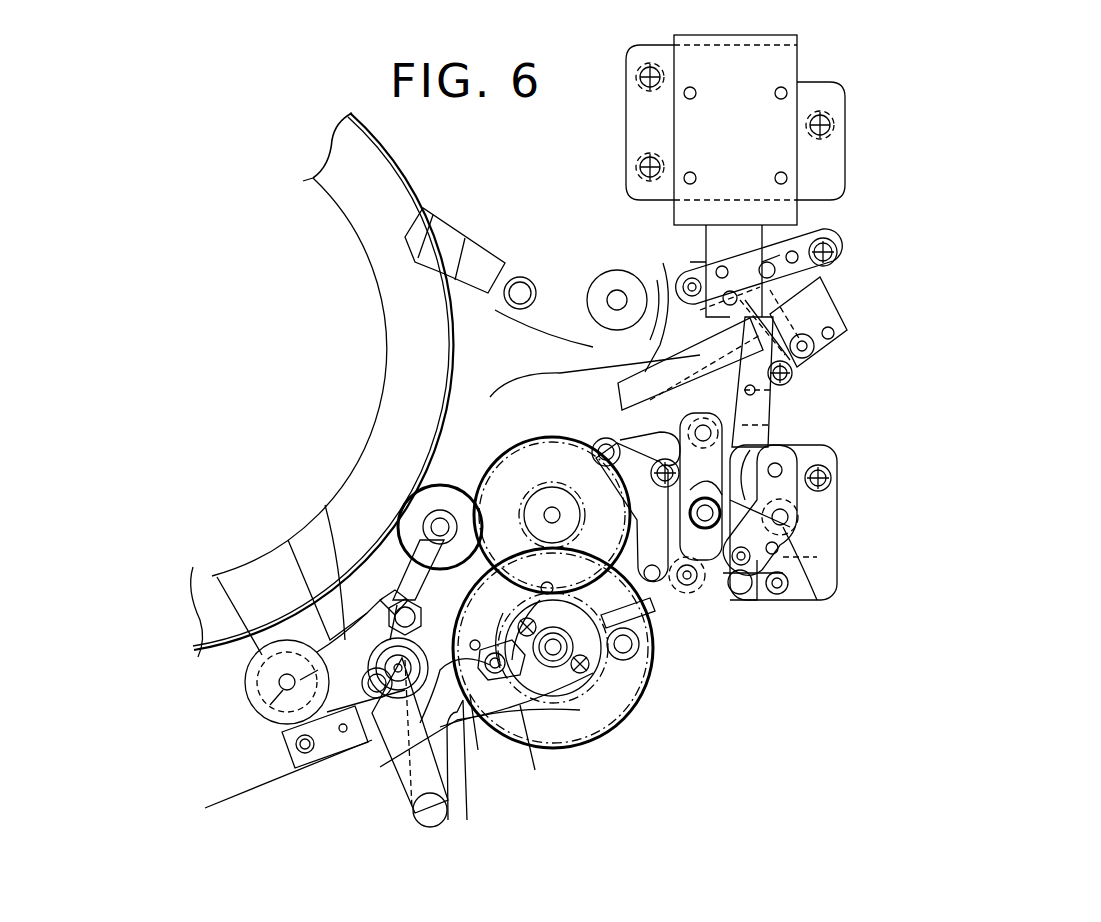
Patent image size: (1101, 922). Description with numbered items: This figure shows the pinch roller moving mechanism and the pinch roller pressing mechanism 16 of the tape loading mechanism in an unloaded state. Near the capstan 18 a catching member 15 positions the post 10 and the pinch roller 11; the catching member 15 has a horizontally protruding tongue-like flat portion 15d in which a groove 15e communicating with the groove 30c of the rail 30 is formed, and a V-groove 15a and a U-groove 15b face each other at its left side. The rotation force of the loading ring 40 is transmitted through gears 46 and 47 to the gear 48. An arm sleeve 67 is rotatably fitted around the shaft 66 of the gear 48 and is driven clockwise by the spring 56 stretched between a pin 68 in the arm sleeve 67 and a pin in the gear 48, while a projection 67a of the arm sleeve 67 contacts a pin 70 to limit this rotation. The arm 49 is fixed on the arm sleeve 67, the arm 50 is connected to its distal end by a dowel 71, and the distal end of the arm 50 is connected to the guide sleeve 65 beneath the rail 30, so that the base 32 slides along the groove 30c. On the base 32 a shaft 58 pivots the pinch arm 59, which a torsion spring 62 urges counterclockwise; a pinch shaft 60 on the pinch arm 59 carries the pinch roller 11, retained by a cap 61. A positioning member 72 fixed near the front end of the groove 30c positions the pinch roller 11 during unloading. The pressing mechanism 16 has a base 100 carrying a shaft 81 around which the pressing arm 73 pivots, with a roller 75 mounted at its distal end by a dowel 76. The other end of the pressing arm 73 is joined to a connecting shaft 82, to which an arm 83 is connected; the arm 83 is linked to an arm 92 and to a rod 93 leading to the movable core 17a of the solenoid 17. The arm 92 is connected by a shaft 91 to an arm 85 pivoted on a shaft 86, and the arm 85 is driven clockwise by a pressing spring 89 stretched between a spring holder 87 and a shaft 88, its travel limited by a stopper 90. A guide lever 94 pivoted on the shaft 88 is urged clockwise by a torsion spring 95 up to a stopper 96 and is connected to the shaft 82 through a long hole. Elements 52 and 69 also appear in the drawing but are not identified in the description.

The solenoid 17 is at (788, 64).
The movable core 17a is at (772, 240).
The catching member 15 is at (828, 237).
The V-groove 15a is at (828, 300).
The U-groove 15b is at (800, 366).
The tongue-like flat portion 15d is at (714, 248).
The groove 15e is at (642, 368).
The capstan 18 is at (614, 300).
The rail 30 is at (555, 347).
The groove 30c is at (497, 395).
The loading ring 40 is at (357, 228).
The gear 46 is at (437, 493).
The gear 47 is at (521, 457).
The gear 48 is at (637, 683).
The arm 49 is at (486, 739).
The arm 50 is at (397, 787).
The screw 52 is at (604, 690).
The spring 56 is at (503, 613).
The shaft 58 is at (421, 617).
The pinch arm 59 is at (288, 540).
The pinch shaft 60 is at (266, 703).
The cap 61 is at (247, 683).
The torsion spring 62 is at (395, 606).
The guide sleeve 65 is at (363, 760).
The shaft 66 is at (590, 712).
The arm sleeve 67 is at (556, 665).
The projection 67a is at (477, 717).
The pin 68 is at (517, 665).
The pin 69 is at (549, 587).
The pin 70 is at (475, 640).
The dowel 71 is at (430, 827).
The positioning member 72 is at (307, 760).
The pressing arm 73 is at (640, 438).
The roller 75 is at (598, 446).
The dowel 76 is at (620, 482).
The shaft 81 is at (706, 426).
The connecting shaft 82 is at (717, 492).
The arm 83 is at (730, 555).
The arm 85 is at (813, 526).
The shaft 86 is at (780, 468).
The spring holder 87 is at (780, 600).
The shaft 88 is at (667, 597).
The pressing spring 89 is at (757, 600).
The stopper 90 is at (778, 549).
The shaft 91 is at (793, 515).
The arm 92 is at (813, 578).
The rod 93 is at (767, 427).
The guide lever 94 is at (667, 598).
The torsion spring 95 is at (650, 597).
The stopper 96 is at (651, 565).
The base 100 is at (837, 482).
The post 10 is at (405, 664).
The pinch roller 11 is at (217, 580).
The pinch roller pressing mechanism 16 is at (832, 600).
The base 32 is at (327, 507).